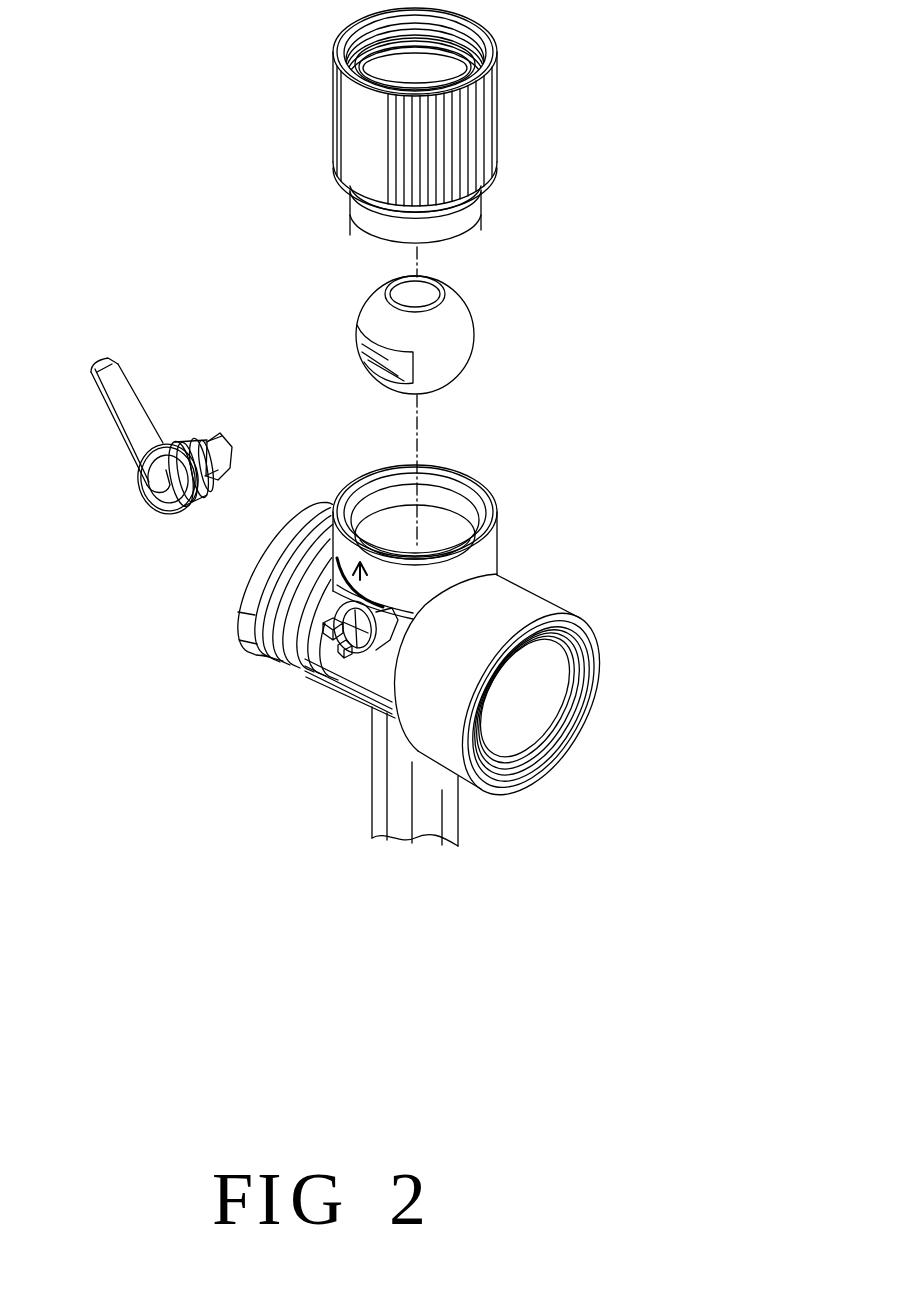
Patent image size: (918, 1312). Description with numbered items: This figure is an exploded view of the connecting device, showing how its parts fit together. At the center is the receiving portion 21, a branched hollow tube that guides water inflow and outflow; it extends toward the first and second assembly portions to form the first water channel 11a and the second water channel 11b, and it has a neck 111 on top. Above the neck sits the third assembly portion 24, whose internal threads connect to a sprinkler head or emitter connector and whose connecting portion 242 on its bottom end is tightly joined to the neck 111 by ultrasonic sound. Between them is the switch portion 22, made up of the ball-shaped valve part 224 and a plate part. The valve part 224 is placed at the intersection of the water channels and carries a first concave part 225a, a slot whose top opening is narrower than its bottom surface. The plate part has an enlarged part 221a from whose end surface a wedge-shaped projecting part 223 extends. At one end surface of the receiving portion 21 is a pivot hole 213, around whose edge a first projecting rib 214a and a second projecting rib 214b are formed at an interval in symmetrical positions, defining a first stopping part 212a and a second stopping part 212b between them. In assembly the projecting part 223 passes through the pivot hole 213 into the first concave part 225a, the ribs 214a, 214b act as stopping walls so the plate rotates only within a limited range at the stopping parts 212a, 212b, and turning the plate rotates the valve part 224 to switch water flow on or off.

The third assembly portion 24 is at (490, 110).
The connecting portion 242 is at (350, 208).
The switch portion 22 is at (197, 415).
The enlarged part 221a is at (185, 518).
The projecting part 223 is at (213, 455).
The valve part 224 is at (462, 360).
The first concave part 225a is at (383, 387).
The receiving portion 21 is at (394, 639).
The neck 111 is at (387, 483).
The first water channel 11a is at (455, 520).
The second water channel 11b is at (567, 710).
The first stopping part 212a is at (340, 613).
The second stopping part 212b is at (348, 632).
The pivot hole 213 is at (342, 645).
The first projecting rib 214a is at (330, 625).
The second projecting rib 214b is at (340, 655).